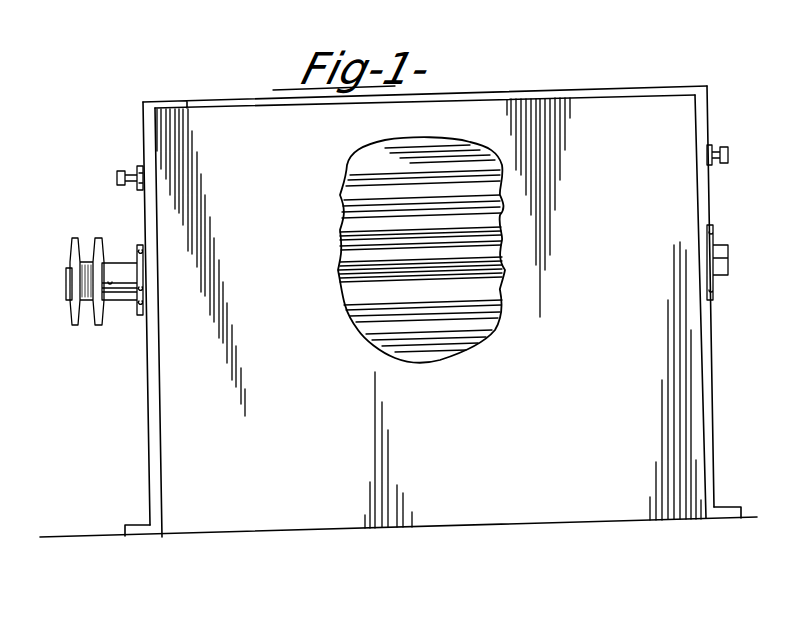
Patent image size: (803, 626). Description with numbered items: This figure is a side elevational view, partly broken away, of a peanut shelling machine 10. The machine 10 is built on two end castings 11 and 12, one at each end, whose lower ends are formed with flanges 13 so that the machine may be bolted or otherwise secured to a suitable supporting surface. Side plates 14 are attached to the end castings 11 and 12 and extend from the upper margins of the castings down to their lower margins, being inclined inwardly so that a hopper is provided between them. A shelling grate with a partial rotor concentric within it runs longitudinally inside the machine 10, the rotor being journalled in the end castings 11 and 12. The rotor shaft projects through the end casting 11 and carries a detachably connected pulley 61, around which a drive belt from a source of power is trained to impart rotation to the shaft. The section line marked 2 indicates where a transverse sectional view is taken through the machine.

The section line 2- 2 is at (178, 75).
The shelling machine 10 is at (136, 415).
The end casting 11 is at (148, 463).
The end casting 12 is at (708, 402).
The flanges 13 is at (140, 529).
The side plates 14 is at (440, 518).
The pulley 61 is at (70, 294).